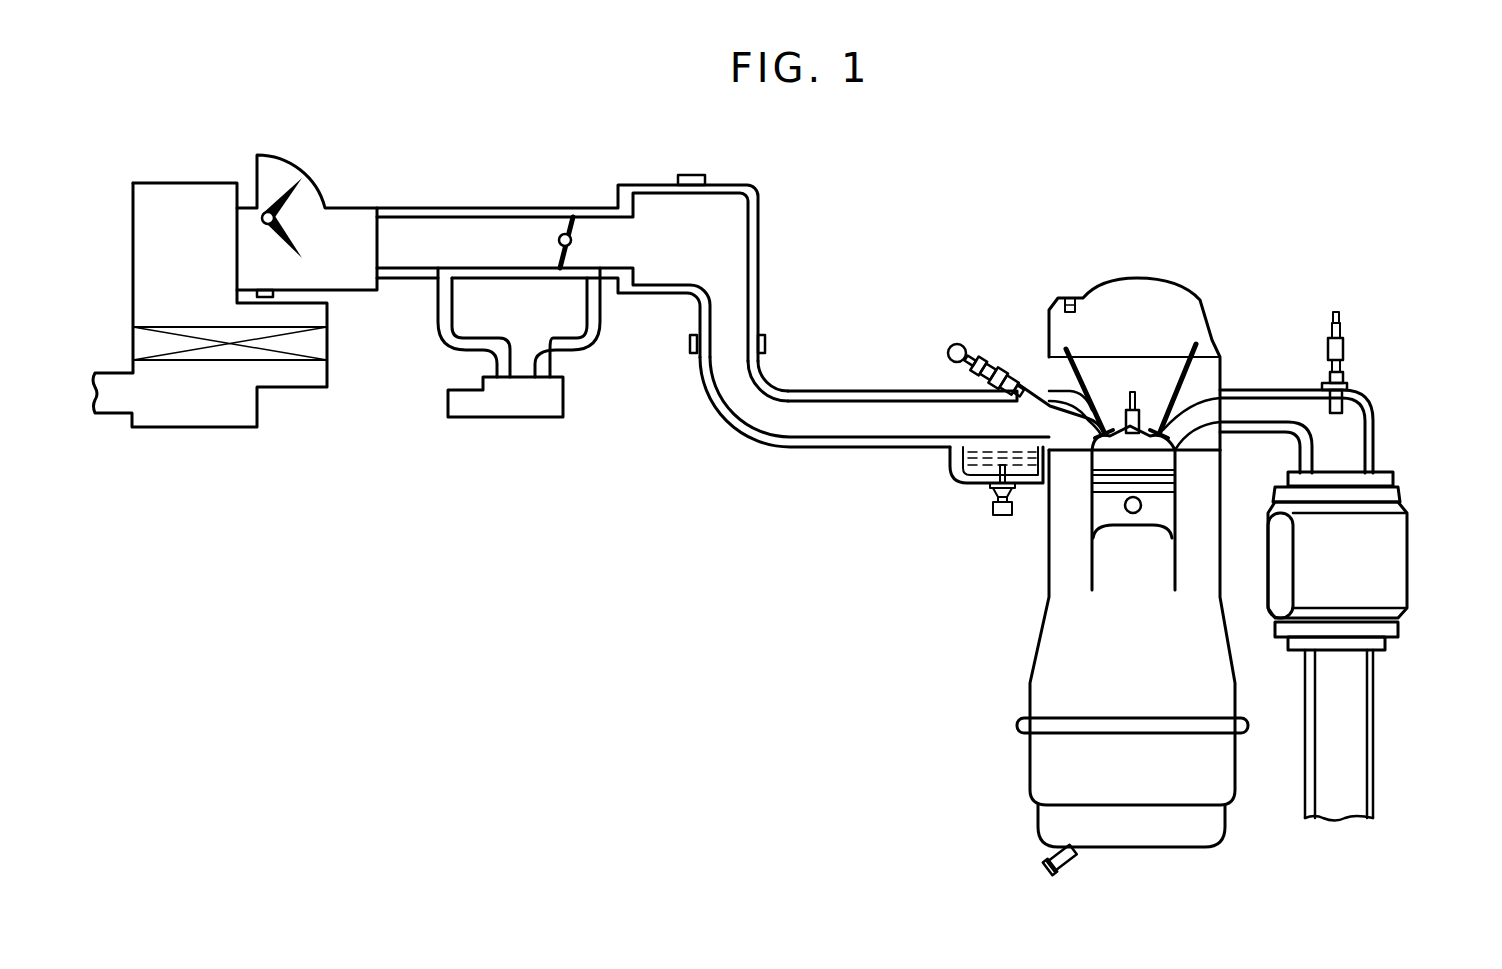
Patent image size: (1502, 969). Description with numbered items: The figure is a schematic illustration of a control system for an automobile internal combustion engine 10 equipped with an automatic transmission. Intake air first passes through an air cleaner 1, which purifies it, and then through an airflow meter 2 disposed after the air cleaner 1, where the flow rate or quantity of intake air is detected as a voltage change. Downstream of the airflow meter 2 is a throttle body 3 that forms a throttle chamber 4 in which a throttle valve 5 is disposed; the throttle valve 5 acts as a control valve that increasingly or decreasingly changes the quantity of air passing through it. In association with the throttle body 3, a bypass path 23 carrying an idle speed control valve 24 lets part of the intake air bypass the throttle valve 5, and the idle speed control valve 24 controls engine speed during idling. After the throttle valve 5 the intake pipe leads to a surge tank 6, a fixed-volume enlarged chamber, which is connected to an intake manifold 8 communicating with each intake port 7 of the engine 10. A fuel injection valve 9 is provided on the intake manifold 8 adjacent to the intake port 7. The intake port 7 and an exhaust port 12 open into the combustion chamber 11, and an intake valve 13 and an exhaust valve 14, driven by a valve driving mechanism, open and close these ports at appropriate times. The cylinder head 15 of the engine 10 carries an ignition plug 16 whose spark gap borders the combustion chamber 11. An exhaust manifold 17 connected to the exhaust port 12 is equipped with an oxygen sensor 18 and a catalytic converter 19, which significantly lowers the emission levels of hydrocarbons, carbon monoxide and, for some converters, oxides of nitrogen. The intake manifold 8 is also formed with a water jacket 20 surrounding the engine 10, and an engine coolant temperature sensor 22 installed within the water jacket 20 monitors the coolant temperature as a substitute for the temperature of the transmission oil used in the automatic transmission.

The air cleaner 1 is at (133, 259).
The airflow meter 2 is at (323, 195).
The throttle body 3 is at (506, 207).
The throttle chamber 4 is at (435, 232).
The throttle valve 5 is at (587, 222).
The surge tank 6 is at (746, 185).
The intake port 7 is at (1063, 455).
The intake manifold 8 is at (847, 390).
The fuel injection valve 9 is at (995, 355).
The engine 10 is at (1100, 555).
The combustion chamber 11 is at (1167, 462).
The exhaust port 12 is at (1217, 453).
The intake valve 13 is at (1083, 368).
The exhaust valve 14 is at (1183, 340).
The cylinder head 15 is at (1222, 362).
The ignition plug 16 is at (1138, 392).
The exhaust manifold 17 is at (1375, 425).
The oxygen sensor 18 is at (1344, 350).
The catalytic converter 19 is at (1388, 575).
The water jacket 20 is at (950, 455).
The engine coolant temperature sensor 22 is at (990, 510).
The bypass path 23 is at (600, 340).
The idle speed control valve 24 is at (505, 420).